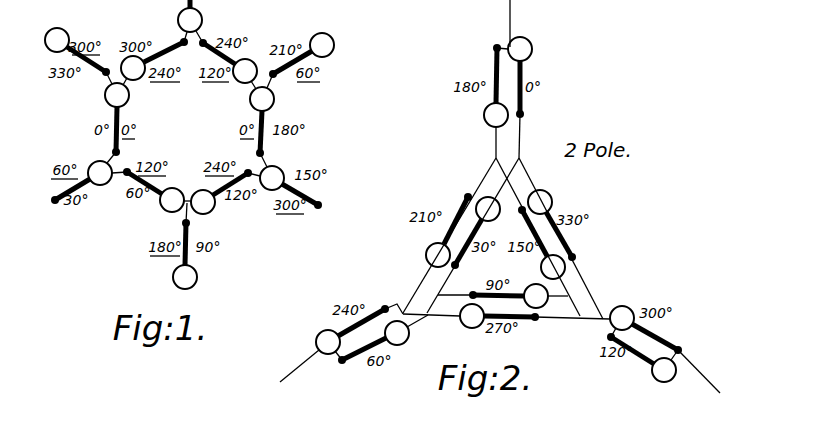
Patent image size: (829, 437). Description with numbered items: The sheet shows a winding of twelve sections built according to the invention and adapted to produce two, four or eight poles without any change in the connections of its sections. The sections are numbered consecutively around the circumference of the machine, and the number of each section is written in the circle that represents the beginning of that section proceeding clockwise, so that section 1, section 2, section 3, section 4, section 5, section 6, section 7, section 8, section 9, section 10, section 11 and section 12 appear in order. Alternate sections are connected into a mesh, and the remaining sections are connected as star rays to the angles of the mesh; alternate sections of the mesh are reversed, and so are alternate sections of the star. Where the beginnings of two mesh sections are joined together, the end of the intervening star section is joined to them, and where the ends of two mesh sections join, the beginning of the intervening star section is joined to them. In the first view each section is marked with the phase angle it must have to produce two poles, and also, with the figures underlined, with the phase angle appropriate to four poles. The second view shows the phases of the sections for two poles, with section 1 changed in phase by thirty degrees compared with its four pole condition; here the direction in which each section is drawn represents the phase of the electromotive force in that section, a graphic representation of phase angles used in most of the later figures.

In FIG. 1, the section 1 is at (117, 123).
In FIG. 2, the section 1 is at (475, 233).
In FIG. 1, the section 2 is at (106, 182).
In FIG. 2, the section 2 is at (373, 342).
In FIG. 1, the section 3 is at (175, 205).
In FIG. 2, the section 3 is at (508, 296).
In FIG. 1, the section 4 is at (185, 254).
In FIG. 2, the section 4 is at (642, 357).
In FIG. 1, the section 5 is at (225, 191).
In FIG. 2, the section 5 is at (541, 242).
In FIG. 1, the section 6 is at (291, 187).
In FIG. 2, the section 6 is at (496, 85).
In FIG. 1, the section 7 is at (262, 127).
In FIG. 2, the section 7 is at (449, 230).
In FIG. 1, the section 8 is at (300, 60).
In FIG. 2, the section 8 is at (352, 332).
In FIG. 1, the section 9 is at (245, 74).
In FIG. 2, the section 9 is at (499, 316).
In FIG. 1, the section 10 is at (206, 32).
In FIG. 2, the section 10 is at (646, 330).
In FIG. 1, the section 11 is at (154, 58).
In FIG. 2, the section 11 is at (552, 225).
In FIG. 1, the section 12 is at (78, 56).
In FIG. 2, the section 12 is at (514, 77).